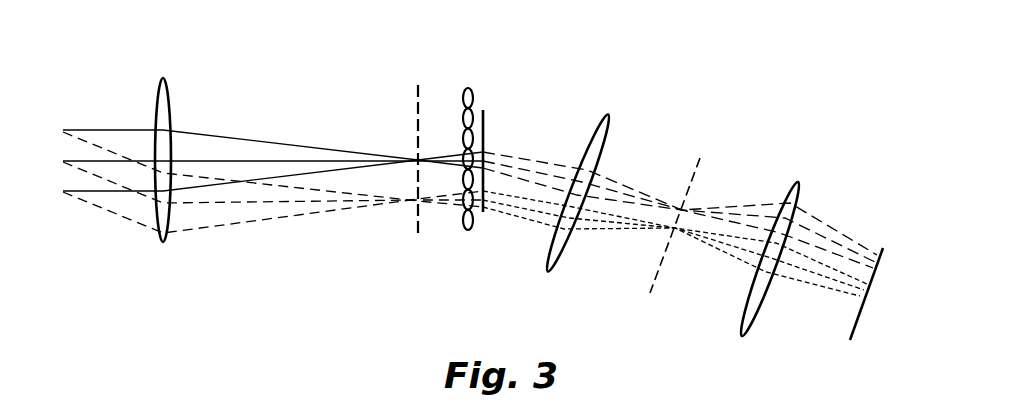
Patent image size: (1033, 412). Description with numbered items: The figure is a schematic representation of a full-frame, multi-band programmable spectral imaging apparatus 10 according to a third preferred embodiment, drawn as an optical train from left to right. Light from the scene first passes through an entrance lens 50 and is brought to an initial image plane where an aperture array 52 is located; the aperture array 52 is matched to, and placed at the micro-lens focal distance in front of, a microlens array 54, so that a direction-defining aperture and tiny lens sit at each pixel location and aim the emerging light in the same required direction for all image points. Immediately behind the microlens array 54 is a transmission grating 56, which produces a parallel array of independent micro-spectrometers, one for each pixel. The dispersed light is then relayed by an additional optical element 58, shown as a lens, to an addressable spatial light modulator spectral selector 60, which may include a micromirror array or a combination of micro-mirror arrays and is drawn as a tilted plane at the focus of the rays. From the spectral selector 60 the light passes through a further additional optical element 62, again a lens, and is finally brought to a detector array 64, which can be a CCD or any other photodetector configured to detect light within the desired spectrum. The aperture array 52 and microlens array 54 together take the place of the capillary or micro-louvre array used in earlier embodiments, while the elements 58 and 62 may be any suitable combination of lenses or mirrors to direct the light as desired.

The apparatus 10 is at (196, 44).
The first lens 50 is at (171, 108).
The aperture array 52 is at (420, 90).
The microlens array 54 is at (470, 90).
The transmission grating 56 is at (486, 128).
The additional optical element 58 is at (609, 125).
The addressable spatial light modulator spectral selector 60 is at (703, 169).
The additional optical element 62 is at (800, 185).
The detector array 64 is at (866, 300).